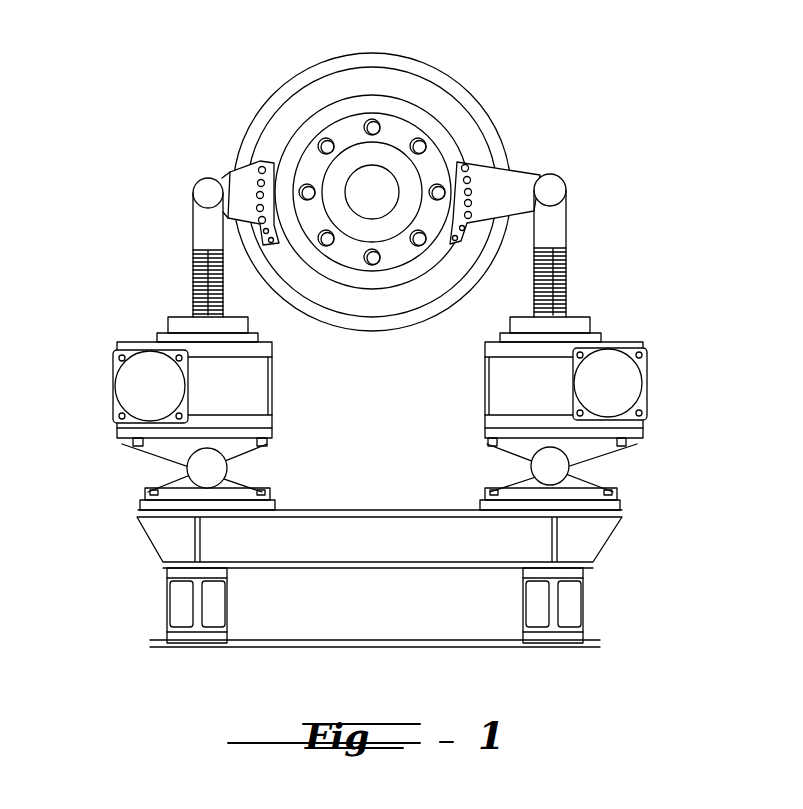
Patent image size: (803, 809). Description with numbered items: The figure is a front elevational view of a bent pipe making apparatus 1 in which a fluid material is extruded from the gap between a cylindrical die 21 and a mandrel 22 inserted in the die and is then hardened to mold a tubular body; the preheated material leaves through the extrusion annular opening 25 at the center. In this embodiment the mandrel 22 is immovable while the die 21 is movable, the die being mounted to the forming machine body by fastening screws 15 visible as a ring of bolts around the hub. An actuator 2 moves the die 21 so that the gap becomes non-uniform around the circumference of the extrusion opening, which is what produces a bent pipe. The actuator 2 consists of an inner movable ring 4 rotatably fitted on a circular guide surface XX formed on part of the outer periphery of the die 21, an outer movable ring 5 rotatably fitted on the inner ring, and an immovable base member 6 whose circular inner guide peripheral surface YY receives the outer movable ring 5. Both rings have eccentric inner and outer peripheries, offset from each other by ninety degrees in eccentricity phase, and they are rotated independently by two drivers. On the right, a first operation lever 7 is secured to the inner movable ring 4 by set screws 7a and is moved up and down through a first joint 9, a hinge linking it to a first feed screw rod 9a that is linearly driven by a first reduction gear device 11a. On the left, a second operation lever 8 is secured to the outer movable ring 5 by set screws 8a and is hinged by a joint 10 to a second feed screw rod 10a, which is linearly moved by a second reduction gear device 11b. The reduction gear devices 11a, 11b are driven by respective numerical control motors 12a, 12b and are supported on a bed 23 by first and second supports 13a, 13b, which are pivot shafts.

The bent pipe making apparatus 1 is at (369, 349).
The actuator 2 is at (478, 95).
The inner movable ring 4 is at (327, 112).
The outer movable ring 5 is at (283, 121).
The base member 6 is at (287, 88).
The first operation lever 7 is at (510, 190).
The set screws 7a is at (473, 188).
The second operation lever 8 is at (232, 173).
The set screws 8a is at (243, 161).
The first joint 9 is at (553, 190).
The first feed screw rod 9a is at (568, 283).
The joint 10 is at (198, 191).
The second feed screw rod 10a is at (194, 270).
The first reduction gear device 11a is at (548, 400).
The second reduction gear device 11b is at (215, 400).
The numerical control motor 12a is at (632, 382).
The numerical control motor 12b is at (128, 382).
The first support 13a is at (558, 468).
The second support 13b is at (198, 470).
The fastening screws 15 is at (322, 243).
The die 21 is at (392, 148).
The mandrel 22 is at (370, 166).
The bed 23 is at (383, 517).
The extrusion annular opening 25 is at (388, 215).
The guide surface XX is at (415, 113).
The inner guide peripheral surface YY is at (379, 68).